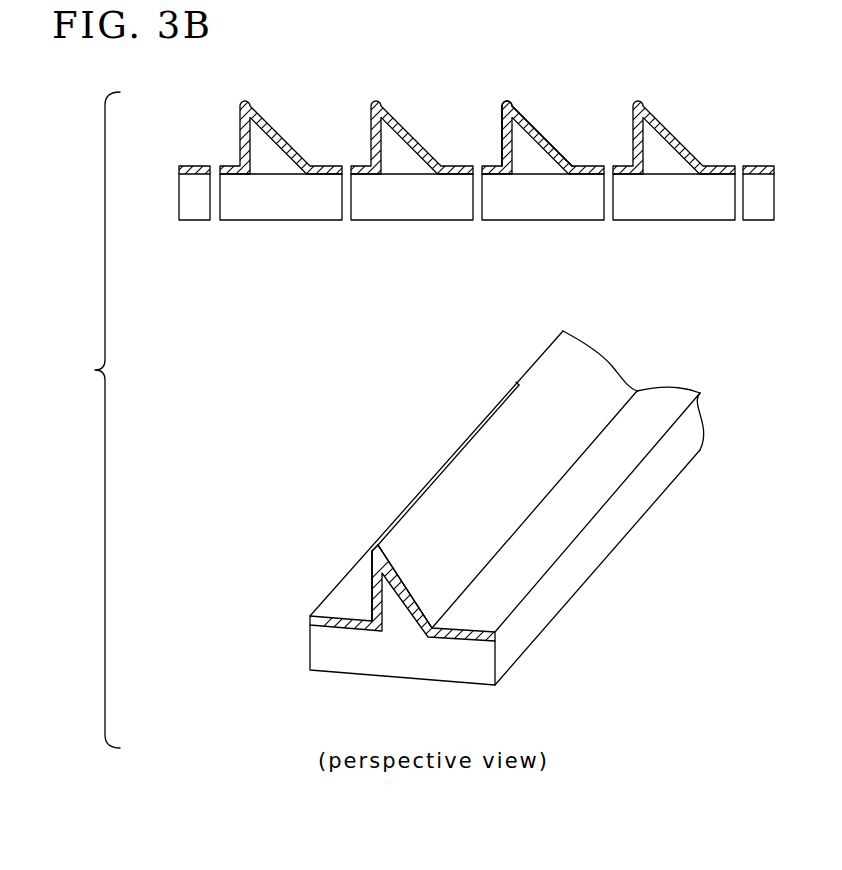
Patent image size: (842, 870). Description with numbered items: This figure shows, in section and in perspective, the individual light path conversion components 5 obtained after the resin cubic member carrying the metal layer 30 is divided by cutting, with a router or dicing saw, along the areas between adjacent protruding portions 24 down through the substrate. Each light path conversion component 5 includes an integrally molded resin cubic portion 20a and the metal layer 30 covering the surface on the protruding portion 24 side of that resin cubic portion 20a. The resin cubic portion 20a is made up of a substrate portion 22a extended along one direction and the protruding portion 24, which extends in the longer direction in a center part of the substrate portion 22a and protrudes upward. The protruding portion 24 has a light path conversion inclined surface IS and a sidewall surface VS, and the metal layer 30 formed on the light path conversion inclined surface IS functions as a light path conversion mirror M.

The light path conversion component 5 is at (486, 389).
The resin cubic portion 20a is at (451, 400).
The substrate portion 22a is at (517, 203).
The protruding portion 24 is at (523, 145).
The metal layer 30 is at (510, 101).
The sidewall surface VS is at (502, 135).
The light path conversion inclined surface IS is at (557, 148).
The light path conversion mirror M is at (555, 127).